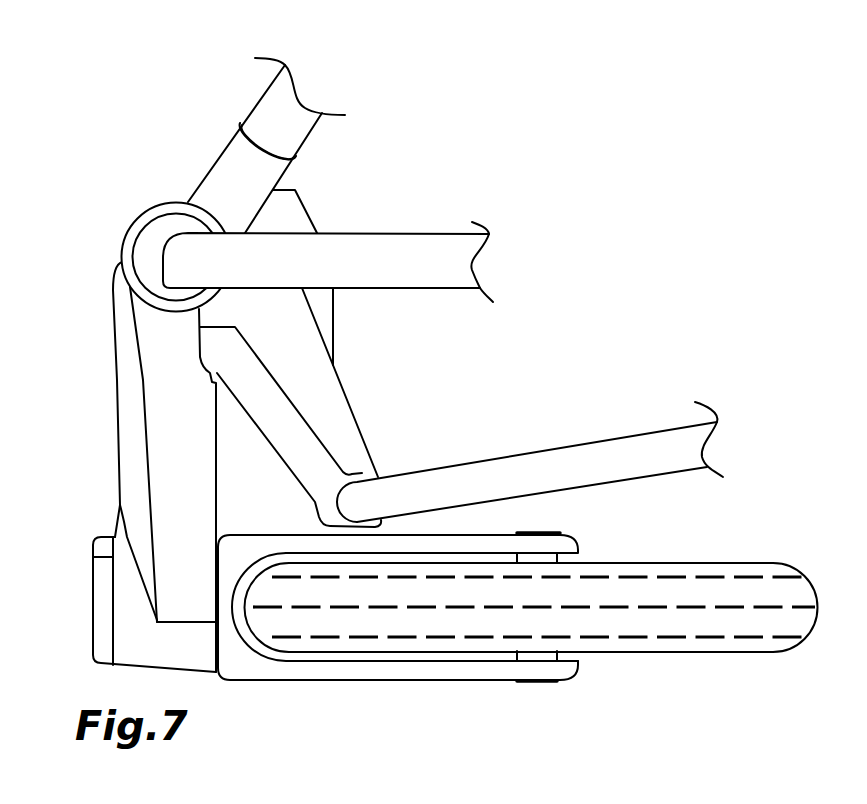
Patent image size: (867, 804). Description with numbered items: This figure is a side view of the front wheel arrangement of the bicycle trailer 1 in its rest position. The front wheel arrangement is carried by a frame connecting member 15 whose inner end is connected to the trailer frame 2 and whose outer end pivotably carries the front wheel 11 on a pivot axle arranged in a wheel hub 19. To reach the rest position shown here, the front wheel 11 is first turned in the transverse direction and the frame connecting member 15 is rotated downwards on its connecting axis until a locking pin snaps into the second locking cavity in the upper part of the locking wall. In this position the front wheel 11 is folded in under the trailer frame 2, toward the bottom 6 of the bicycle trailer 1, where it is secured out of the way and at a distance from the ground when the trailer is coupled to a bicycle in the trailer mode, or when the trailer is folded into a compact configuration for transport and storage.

The bicycle trailer 1 is at (575, 346).
The trailer frame 2 is at (235, 167).
The bottom 6 is at (672, 493).
The front wheel 11 is at (670, 641).
The frame connecting member 15 is at (137, 450).
The wheel hub 19 is at (138, 625).